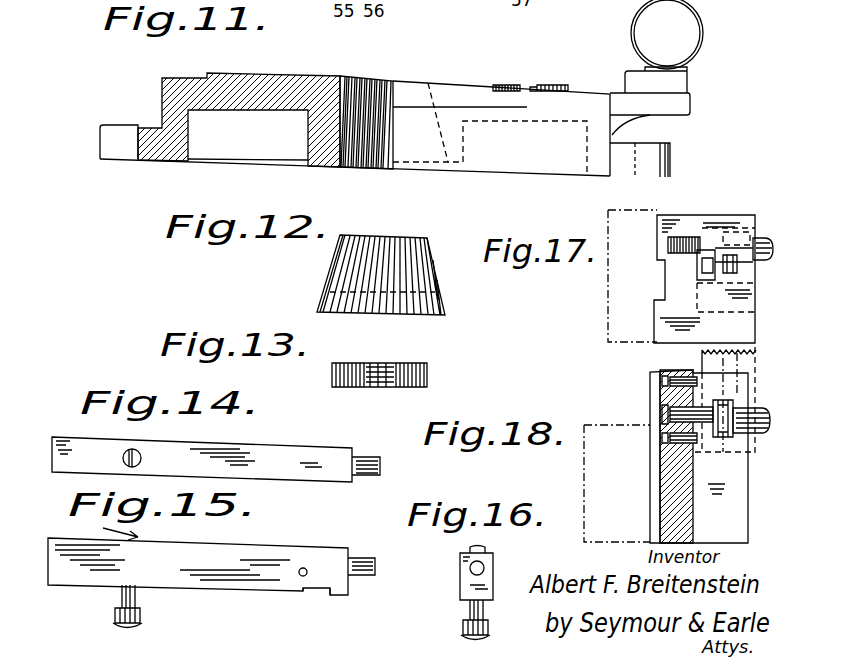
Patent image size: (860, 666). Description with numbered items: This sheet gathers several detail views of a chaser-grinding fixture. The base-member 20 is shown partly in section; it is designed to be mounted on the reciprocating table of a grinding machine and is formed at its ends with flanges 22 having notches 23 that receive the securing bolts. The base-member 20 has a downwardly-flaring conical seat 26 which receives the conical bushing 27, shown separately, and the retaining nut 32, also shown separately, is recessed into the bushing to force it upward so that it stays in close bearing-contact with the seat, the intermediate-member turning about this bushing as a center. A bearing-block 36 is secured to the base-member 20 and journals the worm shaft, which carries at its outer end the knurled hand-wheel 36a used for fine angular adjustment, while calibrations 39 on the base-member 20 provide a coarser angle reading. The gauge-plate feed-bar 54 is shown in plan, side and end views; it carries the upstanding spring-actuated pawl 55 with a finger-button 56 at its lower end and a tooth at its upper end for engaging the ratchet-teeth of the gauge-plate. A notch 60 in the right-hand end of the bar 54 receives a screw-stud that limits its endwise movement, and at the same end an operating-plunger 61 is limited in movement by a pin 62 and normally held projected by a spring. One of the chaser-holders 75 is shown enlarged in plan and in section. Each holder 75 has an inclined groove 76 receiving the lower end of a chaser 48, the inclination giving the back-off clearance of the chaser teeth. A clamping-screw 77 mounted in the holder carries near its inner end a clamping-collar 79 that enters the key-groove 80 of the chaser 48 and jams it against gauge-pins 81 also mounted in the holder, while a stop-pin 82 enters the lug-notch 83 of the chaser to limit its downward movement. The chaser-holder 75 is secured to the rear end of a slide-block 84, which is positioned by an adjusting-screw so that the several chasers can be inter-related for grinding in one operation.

In FIG. 11, the base-member 20 is at (162, 95).
In FIG. 11, the flanges 22 is at (128, 161).
In FIG. 11, the notches 23 is at (100, 142).
In FIG. 11, the conical seat 26 is at (352, 168).
In FIG. 12, the conical bushing 27 is at (340, 268).
In FIG. 13, the nut 32 is at (428, 380).
In FIG. 11, the bearing-block 36 is at (688, 88).
In FIG. 11, the knurled hand-wheel 36a is at (703, 33).
In FIG. 11, the calibrations 39 is at (493, 87).
In FIG. 18, the chasers 48 is at (702, 356).
In FIG. 14, the gauge-plate feed-bar 54 is at (205, 457).
In FIG. 15, the gauge-plate feed-bar 54 is at (222, 558).
In FIG. 16, the gauge-plate feed-bar 54 is at (462, 585).
In FIG. 14, the pawl 55 is at (130, 450).
In FIG. 15, the pawl 55 is at (107, 528).
In FIG. 16, the pawl 55 is at (468, 549).
In FIG. 15, the finger-button 56 is at (115, 615).
In FIG. 16, the finger-button 56 is at (490, 628).
In FIG. 15, the notch 60 is at (322, 592).
In FIG. 14, the operating-plunger 61 is at (372, 458).
In FIG. 15, the operating-plunger 61 is at (376, 566).
In FIG. 16, the operating-plunger 61 is at (485, 568).
In FIG. 15, the pin 62 is at (315, 566).
In FIG. 17, the chaser-holder 75 is at (663, 315).
In FIG. 18, the chaser-holder 75 is at (748, 524).
In FIG. 17, the inclined groove 76 is at (737, 285).
In FIG. 18, the inclined groove 76 is at (740, 500).
In FIG. 17, the clamping-screw 77 is at (757, 240).
In FIG. 18, the clamping-screw 77 is at (766, 433).
In FIG. 17, the clamping-collar 79 is at (740, 265).
In FIG. 18, the clamping-collar 79 is at (725, 425).
In FIG. 18, the key-groove 80 is at (737, 384).
In FIG. 17, the gauge-pins 81 is at (700, 260).
In FIG. 18, the gauge-pins 81 is at (698, 373).
In FIG. 17, the stop-pin 82 is at (710, 278).
In FIG. 18, the stop-pin 82 is at (695, 402).
In FIG. 18, the lug-notch 83 is at (660, 422).
In FIG. 17, the slide-block 84 is at (608, 308).
In FIG. 18, the slide-block 84 is at (584, 478).